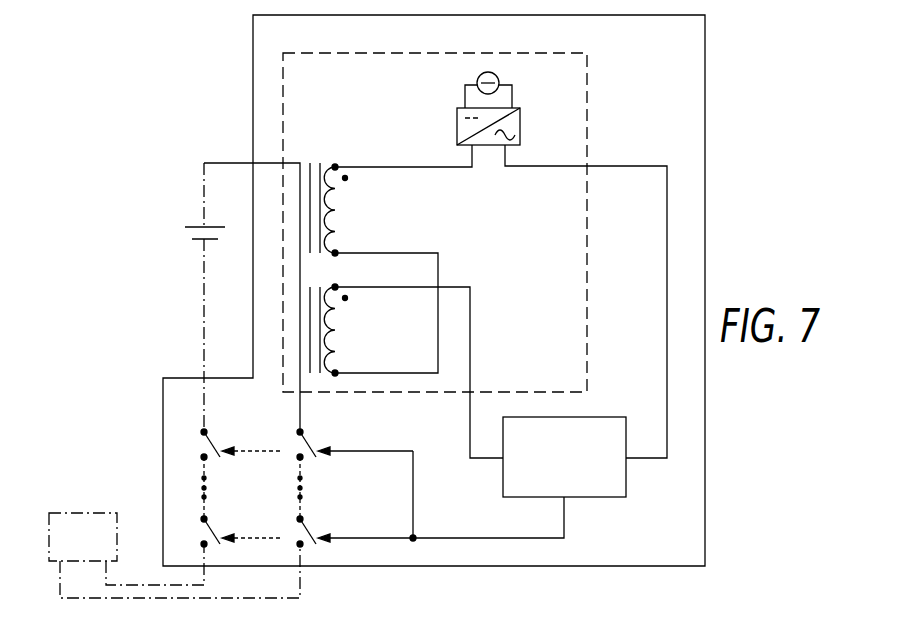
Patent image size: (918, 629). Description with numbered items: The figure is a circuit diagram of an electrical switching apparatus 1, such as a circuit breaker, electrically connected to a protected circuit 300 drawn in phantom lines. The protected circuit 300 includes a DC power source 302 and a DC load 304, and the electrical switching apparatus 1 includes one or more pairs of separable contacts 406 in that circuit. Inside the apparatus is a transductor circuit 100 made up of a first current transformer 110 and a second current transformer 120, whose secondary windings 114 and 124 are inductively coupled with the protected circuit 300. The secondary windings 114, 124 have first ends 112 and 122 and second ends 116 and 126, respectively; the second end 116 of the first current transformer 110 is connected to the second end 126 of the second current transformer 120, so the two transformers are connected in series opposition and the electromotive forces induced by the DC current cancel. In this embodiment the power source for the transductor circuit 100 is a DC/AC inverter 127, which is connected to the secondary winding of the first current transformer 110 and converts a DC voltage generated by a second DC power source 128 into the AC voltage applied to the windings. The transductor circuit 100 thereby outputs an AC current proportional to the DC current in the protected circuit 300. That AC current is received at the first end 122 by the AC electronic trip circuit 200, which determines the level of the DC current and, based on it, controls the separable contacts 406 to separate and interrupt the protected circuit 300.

The electrical switching apparatus 1 is at (253, 17).
The transductor circuit 100 is at (588, 89).
The first current transformer 110 is at (315, 161).
The first end 112 is at (337, 165).
The secondary winding 114 is at (339, 205).
The second end 116 is at (337, 251).
The second current transformer 120 is at (315, 392).
The first end 122 is at (337, 285).
The secondary winding 124 is at (339, 322).
The second end 126 is at (337, 371).
The DC/AC inverter 127 is at (521, 125).
The second DC power source 128 is at (477, 80).
The AC electronic trip circuit 200 is at (627, 499).
The protected circuit 300 is at (205, 161).
The DC power source 302 is at (185, 233).
The DC load 304 is at (68, 513).
The separable contacts 406 is at (306, 443).